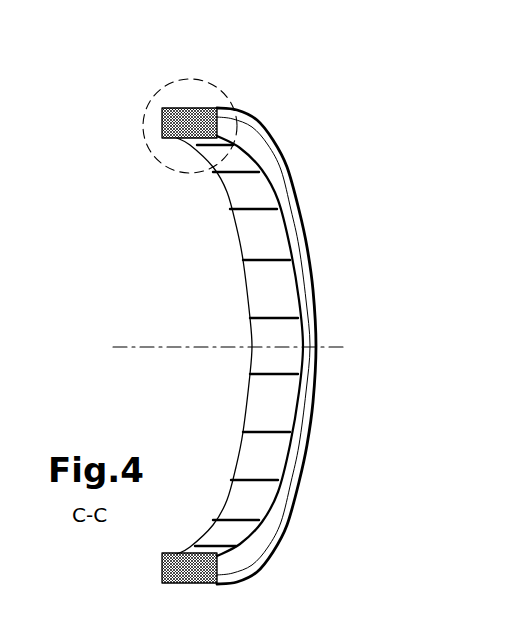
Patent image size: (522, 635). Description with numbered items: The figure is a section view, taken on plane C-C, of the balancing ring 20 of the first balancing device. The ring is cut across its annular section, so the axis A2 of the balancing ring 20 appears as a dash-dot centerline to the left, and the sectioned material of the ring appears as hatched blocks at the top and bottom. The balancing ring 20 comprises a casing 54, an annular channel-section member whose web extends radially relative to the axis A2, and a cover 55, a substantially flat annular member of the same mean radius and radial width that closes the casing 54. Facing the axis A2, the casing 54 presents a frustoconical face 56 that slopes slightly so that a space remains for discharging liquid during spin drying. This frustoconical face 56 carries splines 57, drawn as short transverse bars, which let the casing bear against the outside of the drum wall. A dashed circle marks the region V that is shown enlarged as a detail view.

The balancing ring 20 is at (275, 125).
The casing 54 is at (238, 455).
The cover 55 is at (282, 502).
The frustoconical face 56 is at (267, 293).
The splines 57 is at (245, 258).
The axis A2 is at (137, 347).
The detail view V is at (183, 78).